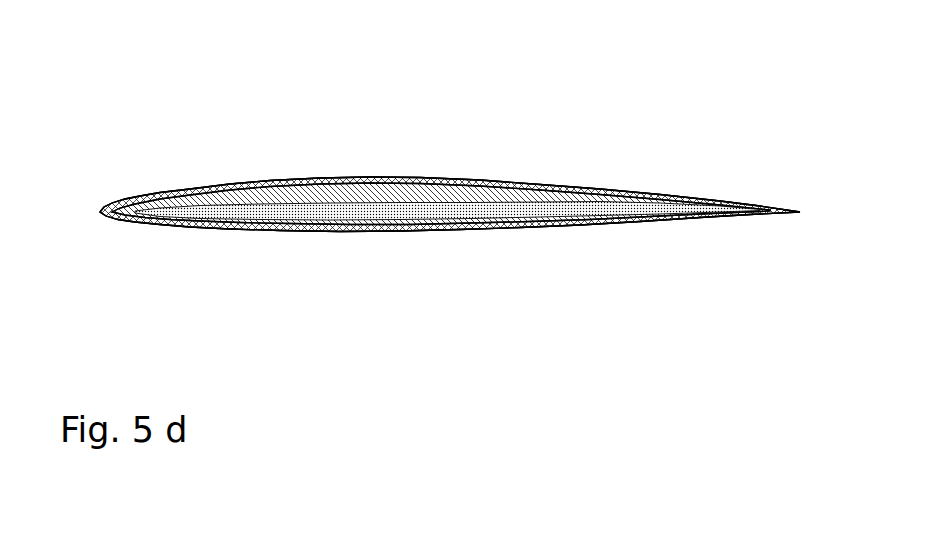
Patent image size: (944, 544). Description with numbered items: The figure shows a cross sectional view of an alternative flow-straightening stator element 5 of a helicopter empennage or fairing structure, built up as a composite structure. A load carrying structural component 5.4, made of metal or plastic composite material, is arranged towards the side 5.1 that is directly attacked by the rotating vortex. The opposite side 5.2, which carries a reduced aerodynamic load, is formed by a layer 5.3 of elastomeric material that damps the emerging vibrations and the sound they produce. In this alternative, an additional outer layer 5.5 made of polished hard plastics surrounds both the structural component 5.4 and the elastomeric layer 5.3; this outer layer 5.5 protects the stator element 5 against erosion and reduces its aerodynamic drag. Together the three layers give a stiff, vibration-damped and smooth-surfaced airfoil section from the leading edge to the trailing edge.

The flow-straightening stator element 5 is at (327, 160).
The side directly attacked by the rotating vortex 5.1 is at (398, 140).
The side with reduced aerodynamic load 5.2 is at (398, 245).
The layer of elastomeric material 5.3 is at (472, 210).
The load carrying structural component 5.4 is at (503, 200).
The additional outer layer 5.5 is at (602, 192).